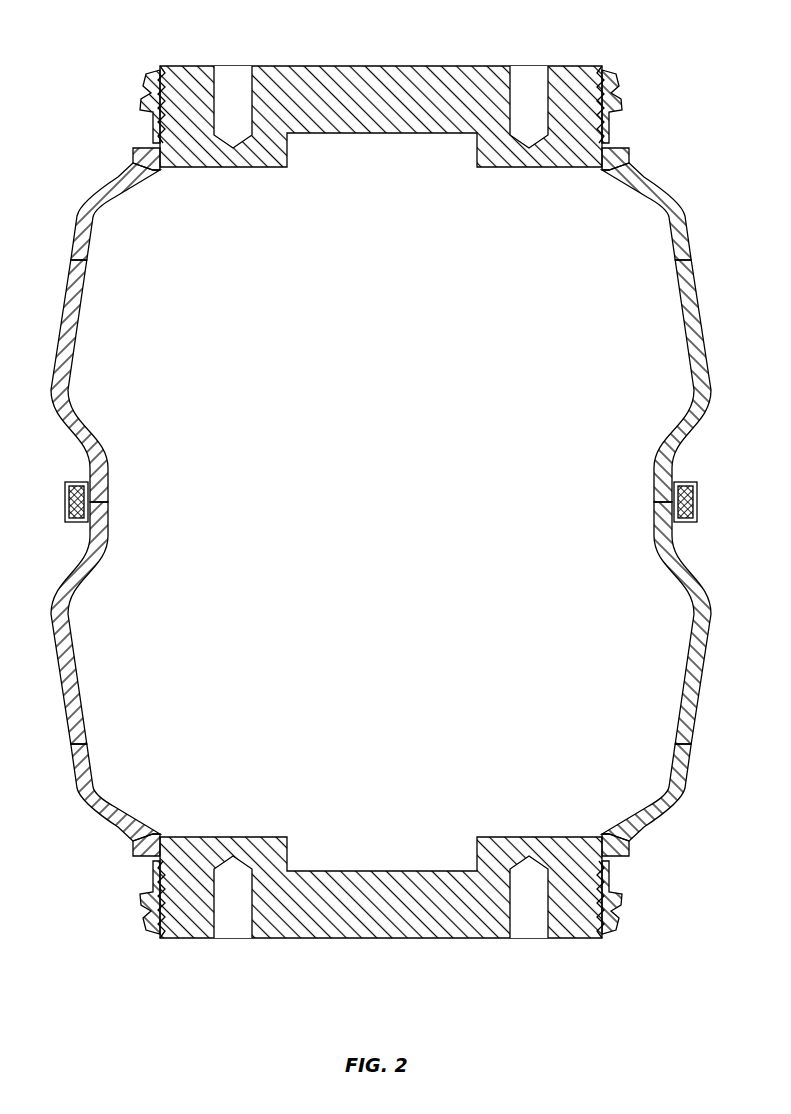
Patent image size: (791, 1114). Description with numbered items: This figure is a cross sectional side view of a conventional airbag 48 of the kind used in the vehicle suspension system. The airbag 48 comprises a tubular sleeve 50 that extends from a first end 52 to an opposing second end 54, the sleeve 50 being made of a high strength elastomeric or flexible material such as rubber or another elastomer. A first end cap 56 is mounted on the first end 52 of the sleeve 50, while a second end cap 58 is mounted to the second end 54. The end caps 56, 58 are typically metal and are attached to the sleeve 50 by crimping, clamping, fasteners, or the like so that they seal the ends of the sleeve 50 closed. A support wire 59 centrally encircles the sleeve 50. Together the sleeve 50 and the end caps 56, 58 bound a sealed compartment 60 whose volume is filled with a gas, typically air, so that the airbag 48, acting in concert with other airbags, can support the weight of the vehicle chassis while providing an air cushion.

The airbag 48 is at (664, 61).
The tubular sleeve 50 is at (130, 743).
The first end 52 is at (107, 182).
The second end 54 is at (110, 815).
The first end cap 56 is at (394, 66).
The second end cap 58 is at (427, 940).
The support wire 59 is at (690, 500).
The sealed compartment 60 is at (707, 670).